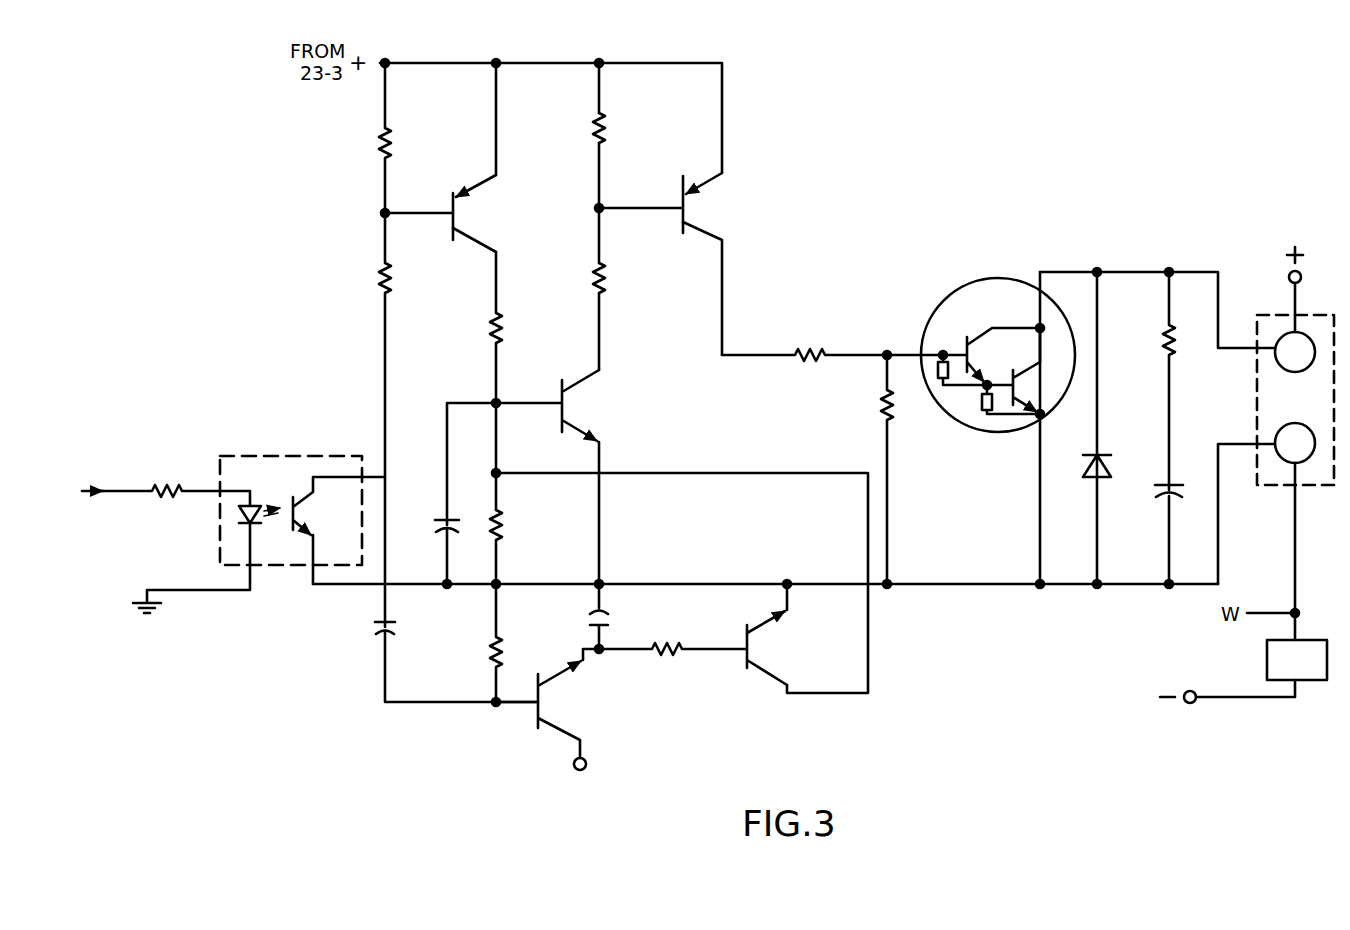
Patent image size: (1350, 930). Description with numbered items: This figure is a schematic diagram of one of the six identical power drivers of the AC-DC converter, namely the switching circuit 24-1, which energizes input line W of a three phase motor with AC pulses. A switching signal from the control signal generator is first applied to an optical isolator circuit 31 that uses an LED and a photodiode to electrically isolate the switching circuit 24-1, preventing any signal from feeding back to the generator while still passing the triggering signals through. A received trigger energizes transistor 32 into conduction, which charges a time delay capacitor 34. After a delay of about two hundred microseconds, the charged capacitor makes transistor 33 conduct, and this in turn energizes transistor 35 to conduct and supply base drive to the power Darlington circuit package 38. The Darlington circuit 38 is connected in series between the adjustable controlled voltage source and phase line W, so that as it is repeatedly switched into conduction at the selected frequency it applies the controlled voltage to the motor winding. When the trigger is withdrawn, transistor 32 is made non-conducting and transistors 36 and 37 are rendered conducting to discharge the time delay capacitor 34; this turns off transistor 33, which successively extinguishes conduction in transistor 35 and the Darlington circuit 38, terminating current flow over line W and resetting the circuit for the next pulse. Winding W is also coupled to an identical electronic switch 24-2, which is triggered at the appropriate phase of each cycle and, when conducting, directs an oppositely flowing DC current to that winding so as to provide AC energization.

The optical isolator circuit 31 is at (298, 455).
The transistor 32 is at (458, 222).
The transistor 33 is at (575, 417).
The time delay capacitor 34 is at (438, 518).
The transistor 35 is at (690, 218).
The transistor 36 is at (548, 699).
The transistor 37 is at (760, 645).
The power Darlington circuit package 38 is at (963, 424).
The switching circuit 24-1 is at (484, 723).
The electronic switch 24-2 is at (1267, 663).